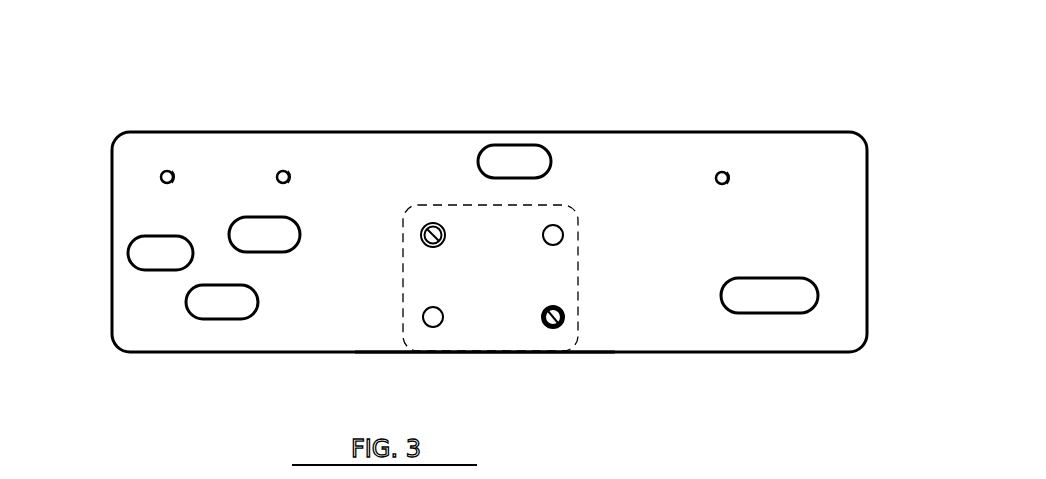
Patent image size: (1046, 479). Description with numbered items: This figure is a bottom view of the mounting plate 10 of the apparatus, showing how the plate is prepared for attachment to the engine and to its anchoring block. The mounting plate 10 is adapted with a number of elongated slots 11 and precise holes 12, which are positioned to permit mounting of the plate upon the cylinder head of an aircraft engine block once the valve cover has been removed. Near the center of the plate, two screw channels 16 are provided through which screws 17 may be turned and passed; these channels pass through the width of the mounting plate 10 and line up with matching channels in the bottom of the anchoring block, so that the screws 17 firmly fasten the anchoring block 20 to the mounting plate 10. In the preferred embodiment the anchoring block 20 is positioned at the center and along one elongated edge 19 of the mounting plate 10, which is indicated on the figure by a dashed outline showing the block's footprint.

The mounting plate 10 is at (489, 206).
The elongated slots 11 is at (473, 242).
The precise holes 12 is at (472, 128).
The screw channels 16 is at (529, 275).
The screws 17 is at (463, 276).
The elongated edge 19 is at (485, 386).
The anchoring block 20 is at (448, 224).